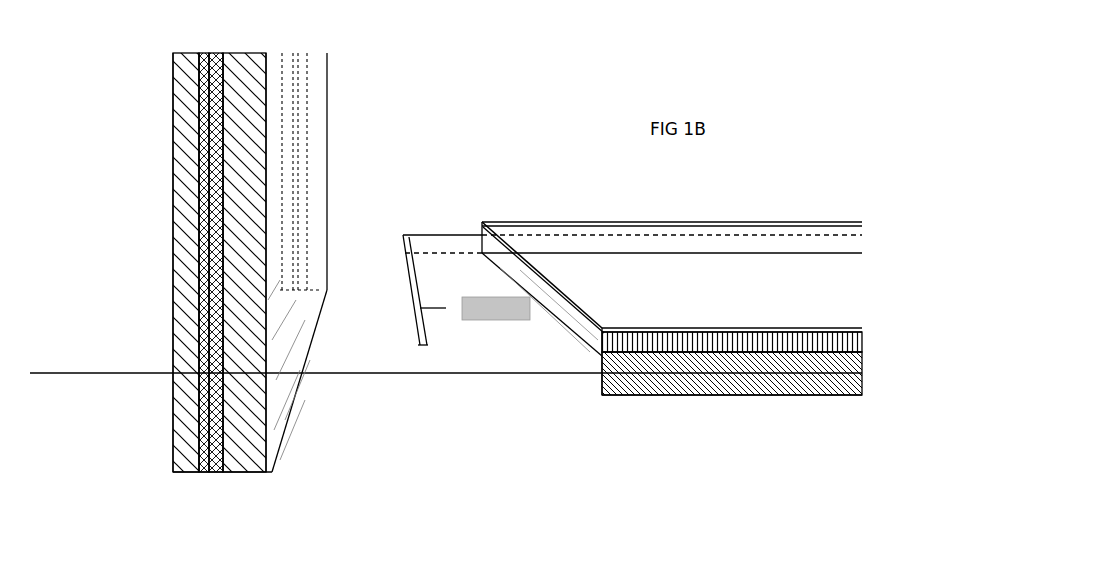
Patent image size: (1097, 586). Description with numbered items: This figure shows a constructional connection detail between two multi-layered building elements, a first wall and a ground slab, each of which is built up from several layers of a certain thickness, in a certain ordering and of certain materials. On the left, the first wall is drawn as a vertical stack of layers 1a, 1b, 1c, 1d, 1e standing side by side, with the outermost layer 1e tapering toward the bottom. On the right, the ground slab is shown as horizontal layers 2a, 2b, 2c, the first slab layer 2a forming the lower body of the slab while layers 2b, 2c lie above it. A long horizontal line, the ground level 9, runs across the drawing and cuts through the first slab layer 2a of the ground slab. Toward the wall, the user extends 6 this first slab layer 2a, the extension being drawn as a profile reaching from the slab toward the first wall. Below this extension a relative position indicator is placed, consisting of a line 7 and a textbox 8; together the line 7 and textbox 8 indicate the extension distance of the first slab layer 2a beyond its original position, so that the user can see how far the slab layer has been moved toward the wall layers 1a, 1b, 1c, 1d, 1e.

The layer of the first wall 1a is at (178, 462).
The layer of the first wall 1b is at (200, 472).
The layer of the first wall 1c is at (218, 472).
The layer of the first wall 1d is at (245, 473).
The layer of the first wall 1e is at (268, 472).
The first slab layer 2a is at (645, 397).
The layer of the ground slab 2b is at (598, 333).
The layer of the ground slab 2c is at (542, 330).
The extension 6 is at (462, 278).
The line 7 is at (445, 310).
The textbox 8 is at (478, 322).
The ground level 9 is at (103, 373).